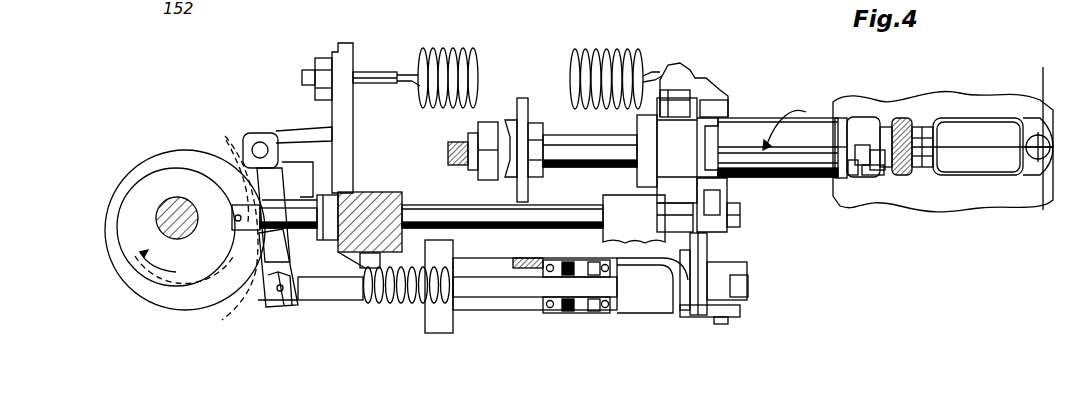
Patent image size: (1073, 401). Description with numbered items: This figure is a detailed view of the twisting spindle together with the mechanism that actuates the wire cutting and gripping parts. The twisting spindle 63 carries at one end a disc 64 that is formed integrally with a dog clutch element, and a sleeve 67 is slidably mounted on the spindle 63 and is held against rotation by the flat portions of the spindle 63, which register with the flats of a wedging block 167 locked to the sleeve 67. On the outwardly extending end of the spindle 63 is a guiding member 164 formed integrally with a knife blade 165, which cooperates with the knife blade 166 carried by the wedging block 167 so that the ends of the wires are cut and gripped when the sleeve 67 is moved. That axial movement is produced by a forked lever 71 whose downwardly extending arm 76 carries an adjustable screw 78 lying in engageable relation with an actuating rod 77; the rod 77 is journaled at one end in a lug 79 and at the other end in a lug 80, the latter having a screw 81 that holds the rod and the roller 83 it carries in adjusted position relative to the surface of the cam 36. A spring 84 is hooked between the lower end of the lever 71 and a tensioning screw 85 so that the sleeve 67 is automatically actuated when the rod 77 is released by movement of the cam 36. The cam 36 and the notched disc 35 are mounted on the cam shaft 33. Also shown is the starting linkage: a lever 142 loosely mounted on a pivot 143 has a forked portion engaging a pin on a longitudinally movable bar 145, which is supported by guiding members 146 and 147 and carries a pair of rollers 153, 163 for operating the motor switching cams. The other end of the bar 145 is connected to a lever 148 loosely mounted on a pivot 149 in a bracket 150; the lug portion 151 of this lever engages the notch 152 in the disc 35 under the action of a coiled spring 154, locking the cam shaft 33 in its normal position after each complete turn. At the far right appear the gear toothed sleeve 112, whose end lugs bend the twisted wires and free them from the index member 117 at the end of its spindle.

The shaft 33 is at (178, 239).
The notched disc 35 is at (106, 211).
The cam 36 is at (147, 178).
The spindle 63 is at (584, 139).
The disc 64 is at (525, 98).
The sleeve 67 is at (743, 122).
The forked lever 71 is at (718, 92).
The downwardly extending arm 76 is at (730, 232).
The actuating rod 77 is at (445, 210).
The adjustable screw 78 is at (742, 214).
The lug 79 is at (608, 198).
The lug 80 is at (403, 186).
The screw 81 is at (362, 259).
The roller 83 is at (231, 216).
The spring 84 is at (479, 80).
The tensioning screw 85 is at (384, 72).
The gear toothed sleeve 112 is at (1033, 117).
The index member 117 is at (1052, 181).
The lever 142 is at (720, 245).
The pivot 143 is at (722, 321).
The longitudinal movable bar 145 is at (349, 290).
The guiding member 146 is at (651, 292).
The guiding member 147 is at (503, 262).
The lever 148 is at (280, 196).
The pivot 149 is at (261, 143).
The bracket 150 is at (307, 119).
The lug portion 151 is at (226, 141).
The notch 152 is at (260, 283).
The roller 153 is at (583, 262).
The coiled spring 154 is at (394, 305).
The roller 163 is at (592, 304).
The guiding member 164 is at (882, 175).
The knife blade 165 is at (876, 170).
The knife blade 166 is at (858, 176).
The wedging block 167 is at (856, 145).